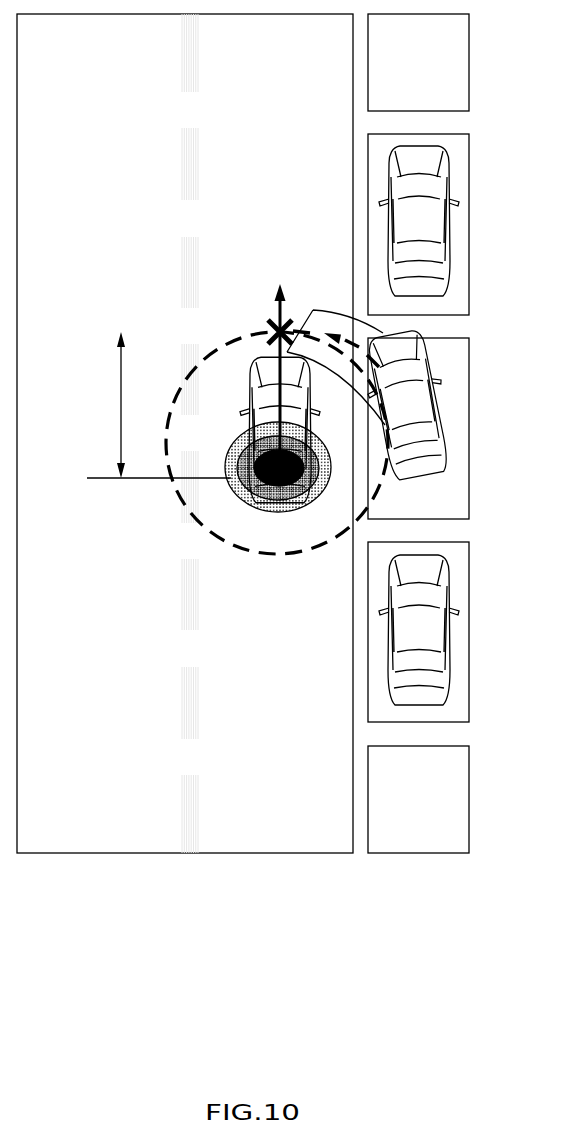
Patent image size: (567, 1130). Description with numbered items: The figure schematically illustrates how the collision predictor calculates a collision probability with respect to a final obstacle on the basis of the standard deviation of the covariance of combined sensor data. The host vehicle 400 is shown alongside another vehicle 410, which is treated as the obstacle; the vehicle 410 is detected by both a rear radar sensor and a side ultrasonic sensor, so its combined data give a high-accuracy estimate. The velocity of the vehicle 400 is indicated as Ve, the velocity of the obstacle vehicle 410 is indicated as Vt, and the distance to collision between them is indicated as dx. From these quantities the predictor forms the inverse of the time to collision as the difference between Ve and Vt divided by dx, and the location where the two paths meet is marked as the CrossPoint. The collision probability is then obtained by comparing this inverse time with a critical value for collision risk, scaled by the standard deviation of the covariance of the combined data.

The vehicle 400 is at (445, 412).
The other vehicle 410 is at (277, 512).
The velocity of an obstacle Vt is at (277, 364).
The velocity of a vehicle Ve is at (336, 336).
The distance to collision dx is at (101, 405).
The cross point CrossPoint is at (275, 332).